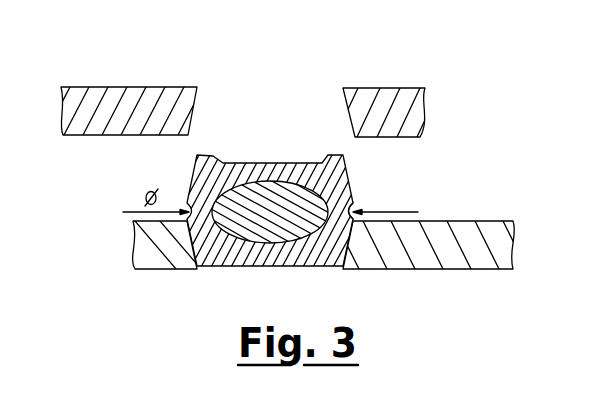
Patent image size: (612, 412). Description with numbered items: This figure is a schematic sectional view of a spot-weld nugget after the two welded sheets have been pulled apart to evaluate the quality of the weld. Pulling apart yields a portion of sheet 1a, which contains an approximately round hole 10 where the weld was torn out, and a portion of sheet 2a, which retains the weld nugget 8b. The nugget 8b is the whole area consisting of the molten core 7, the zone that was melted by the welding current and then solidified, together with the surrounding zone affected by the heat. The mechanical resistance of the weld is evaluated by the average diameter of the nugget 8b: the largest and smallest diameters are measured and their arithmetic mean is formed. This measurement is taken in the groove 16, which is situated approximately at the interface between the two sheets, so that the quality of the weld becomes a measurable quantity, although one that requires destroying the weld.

The hole 10 is at (286, 173).
The portion of sheet 1a is at (385, 88).
The weld nugget 8b is at (350, 164).
The groove 16 is at (351, 208).
The molten core 7 is at (251, 218).
The portion of sheet 2a is at (453, 270).